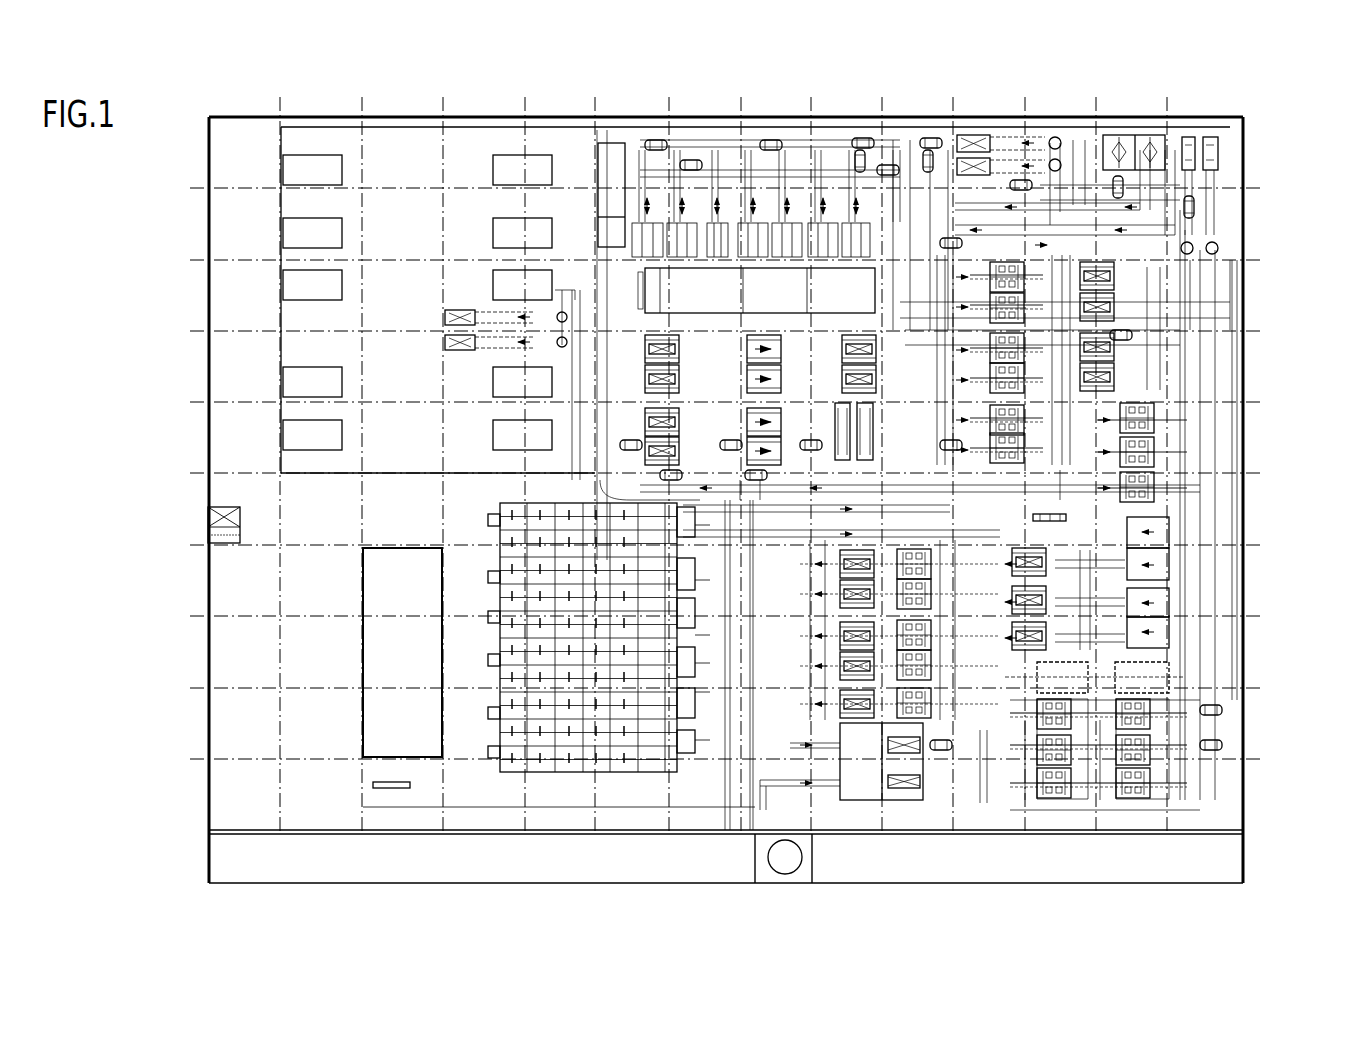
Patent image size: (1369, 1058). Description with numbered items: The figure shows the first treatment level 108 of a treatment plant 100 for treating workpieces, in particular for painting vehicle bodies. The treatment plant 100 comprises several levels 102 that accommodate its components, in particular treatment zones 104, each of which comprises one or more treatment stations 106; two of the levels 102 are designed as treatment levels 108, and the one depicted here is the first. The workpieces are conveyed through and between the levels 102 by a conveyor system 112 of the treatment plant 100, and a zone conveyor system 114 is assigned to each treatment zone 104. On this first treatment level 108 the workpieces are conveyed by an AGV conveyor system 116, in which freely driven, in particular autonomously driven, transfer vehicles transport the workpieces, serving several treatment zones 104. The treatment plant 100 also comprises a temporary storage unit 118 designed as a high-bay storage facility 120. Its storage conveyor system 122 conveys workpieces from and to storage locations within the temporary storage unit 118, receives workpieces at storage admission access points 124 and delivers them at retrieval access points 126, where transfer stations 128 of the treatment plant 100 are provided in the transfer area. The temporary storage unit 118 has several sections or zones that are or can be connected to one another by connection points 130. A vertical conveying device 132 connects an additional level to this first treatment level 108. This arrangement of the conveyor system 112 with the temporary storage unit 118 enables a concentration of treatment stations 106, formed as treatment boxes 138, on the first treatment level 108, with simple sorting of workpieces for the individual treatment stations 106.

The treatment plant 100 is at (1292, 165).
The level 102 is at (1248, 120).
The treatment zone 104 is at (877, 285).
The treatment station 106 is at (847, 750).
The treatment level 108 is at (203, 110).
The conveyor system 112 is at (1228, 360).
The zone conveyor system 114 is at (1220, 780).
The AGV conveyor system 116 is at (1220, 760).
The temporary storage unit 118 is at (552, 778).
The high-bay storage facility 120 is at (575, 778).
The storage conveyor system 122 is at (495, 758).
The storage admission access point 124 is at (677, 677).
The retrieval access point 126 is at (677, 533).
The transfer station 128 is at (677, 747).
The connection point 130 is at (567, 752).
The vertical conveying device 132 is at (858, 400).
The treatment box 138 is at (1159, 627).